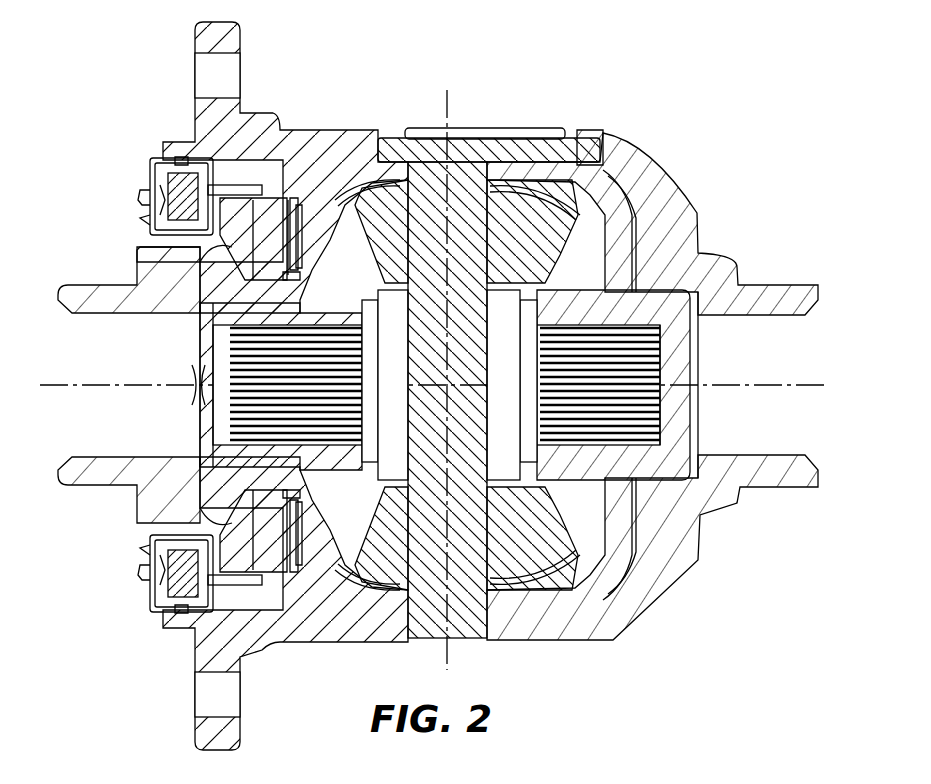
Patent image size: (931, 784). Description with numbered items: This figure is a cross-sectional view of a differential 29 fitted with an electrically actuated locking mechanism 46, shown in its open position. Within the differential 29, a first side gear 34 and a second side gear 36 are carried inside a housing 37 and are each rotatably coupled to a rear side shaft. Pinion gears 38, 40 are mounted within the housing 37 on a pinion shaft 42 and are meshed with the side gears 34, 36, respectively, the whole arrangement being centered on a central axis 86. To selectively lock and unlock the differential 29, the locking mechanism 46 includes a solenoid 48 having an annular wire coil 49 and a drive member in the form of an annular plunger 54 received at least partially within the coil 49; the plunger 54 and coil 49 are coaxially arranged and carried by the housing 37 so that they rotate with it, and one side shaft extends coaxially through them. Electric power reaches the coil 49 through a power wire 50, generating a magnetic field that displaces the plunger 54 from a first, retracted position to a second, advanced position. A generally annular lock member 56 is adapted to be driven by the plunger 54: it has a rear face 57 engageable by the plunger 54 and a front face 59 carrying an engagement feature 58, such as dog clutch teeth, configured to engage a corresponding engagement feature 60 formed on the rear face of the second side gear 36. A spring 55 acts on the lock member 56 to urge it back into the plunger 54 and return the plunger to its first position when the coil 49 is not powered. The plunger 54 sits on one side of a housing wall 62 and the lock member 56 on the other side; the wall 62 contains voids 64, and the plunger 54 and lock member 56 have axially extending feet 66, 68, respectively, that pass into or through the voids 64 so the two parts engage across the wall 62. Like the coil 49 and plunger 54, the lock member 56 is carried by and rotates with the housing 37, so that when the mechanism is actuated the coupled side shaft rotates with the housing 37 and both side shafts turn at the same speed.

The differential 29 is at (612, 118).
The first side gear 34 is at (232, 320).
The second side gear 36 is at (660, 318).
The housing 37 is at (378, 137).
The pinion gear 38 is at (535, 210).
The pinion gear 40 is at (510, 567).
The pinion shaft 42 is at (462, 172).
The locking mechanism 46 is at (140, 232).
The solenoid 48 is at (145, 605).
The annular wire coil 49 is at (165, 193).
The power wire 50 is at (160, 588).
The plunger 54 is at (140, 257).
The spring 55 is at (292, 275).
The lock member 56 is at (283, 200).
The rear face 57 is at (185, 200).
The engagement feature 58 is at (300, 205).
The front face 59 is at (290, 200).
The engagement feature 60 is at (302, 212).
The housing wall 62 is at (188, 547).
The voids 64 is at (256, 250).
The feet 66 is at (214, 250).
The feet 68 is at (238, 195).
The central axis 86 is at (48, 384).